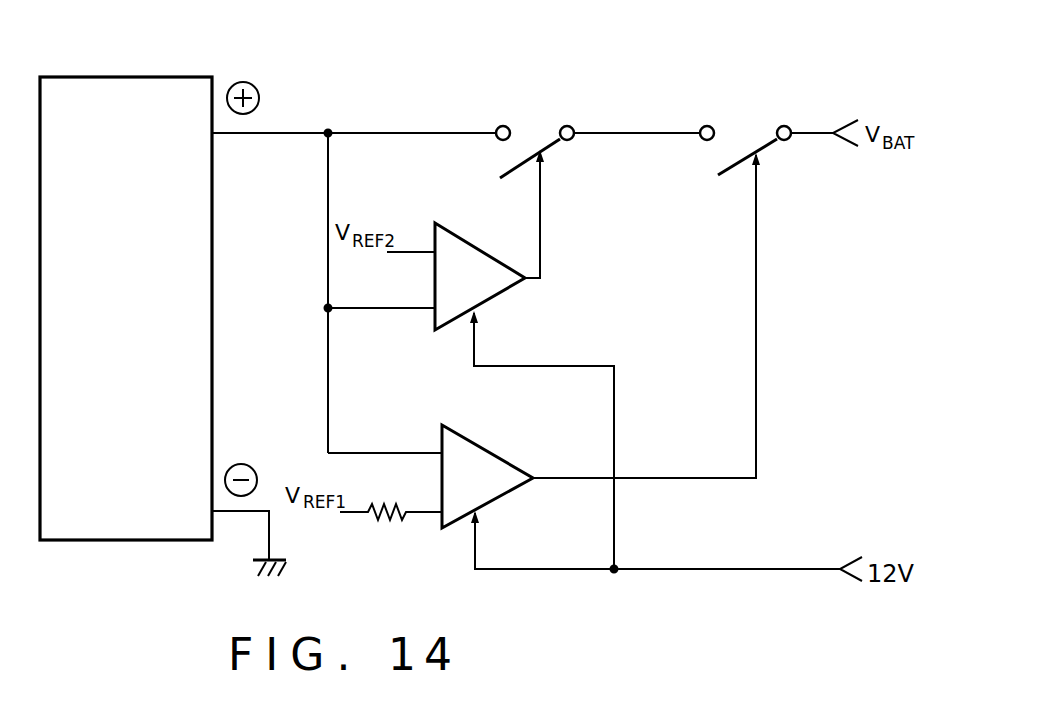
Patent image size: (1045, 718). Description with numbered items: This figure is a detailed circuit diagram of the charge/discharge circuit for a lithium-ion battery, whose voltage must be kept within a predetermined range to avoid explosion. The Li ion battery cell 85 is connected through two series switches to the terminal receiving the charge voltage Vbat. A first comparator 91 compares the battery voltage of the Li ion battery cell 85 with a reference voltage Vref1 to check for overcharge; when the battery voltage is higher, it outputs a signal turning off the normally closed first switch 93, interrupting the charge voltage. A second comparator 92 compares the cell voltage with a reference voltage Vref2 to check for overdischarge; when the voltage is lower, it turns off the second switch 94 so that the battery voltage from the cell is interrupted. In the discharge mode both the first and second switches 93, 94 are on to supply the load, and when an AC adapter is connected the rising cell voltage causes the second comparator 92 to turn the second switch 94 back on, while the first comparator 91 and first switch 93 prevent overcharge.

The Li ion battery cell 85 is at (104, 77).
The first comparator 91 is at (496, 455).
The second comparator 92 is at (495, 258).
The first switch 93 is at (738, 125).
The second switch 94 is at (531, 132).